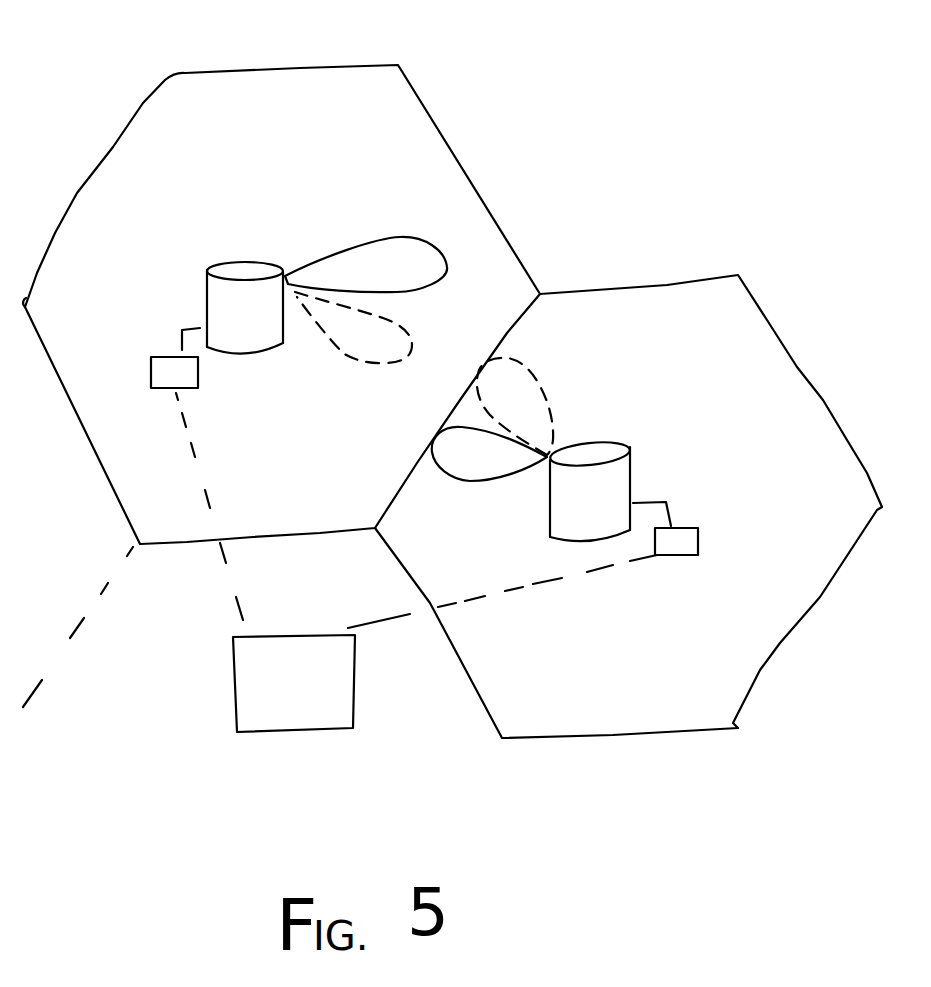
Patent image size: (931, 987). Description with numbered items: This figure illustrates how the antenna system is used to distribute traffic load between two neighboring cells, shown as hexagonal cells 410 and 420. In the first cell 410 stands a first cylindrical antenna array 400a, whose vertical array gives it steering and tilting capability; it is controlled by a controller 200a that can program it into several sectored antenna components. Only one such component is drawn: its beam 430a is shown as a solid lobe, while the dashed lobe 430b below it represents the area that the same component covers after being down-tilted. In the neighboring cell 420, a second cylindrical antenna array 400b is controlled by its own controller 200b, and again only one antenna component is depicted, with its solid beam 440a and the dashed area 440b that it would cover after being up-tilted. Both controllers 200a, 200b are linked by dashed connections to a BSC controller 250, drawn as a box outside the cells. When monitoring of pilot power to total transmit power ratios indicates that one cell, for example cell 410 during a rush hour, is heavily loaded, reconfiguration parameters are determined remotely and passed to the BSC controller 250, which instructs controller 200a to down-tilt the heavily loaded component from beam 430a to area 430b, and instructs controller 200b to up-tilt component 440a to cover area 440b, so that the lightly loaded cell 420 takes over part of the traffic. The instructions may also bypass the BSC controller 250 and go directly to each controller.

The cell 410 is at (277, 67).
The neighboring cell 420 is at (677, 283).
The cylindrical antenna array 400a is at (200, 282).
The cylindrical antenna array 400b is at (633, 465).
The beam 430a is at (357, 237).
The area 430b is at (340, 357).
The antenna component beam 440a is at (472, 480).
The area 440b is at (527, 361).
The controller 200a is at (152, 357).
The controller 200b is at (693, 521).
The BSC controller 250 is at (233, 672).